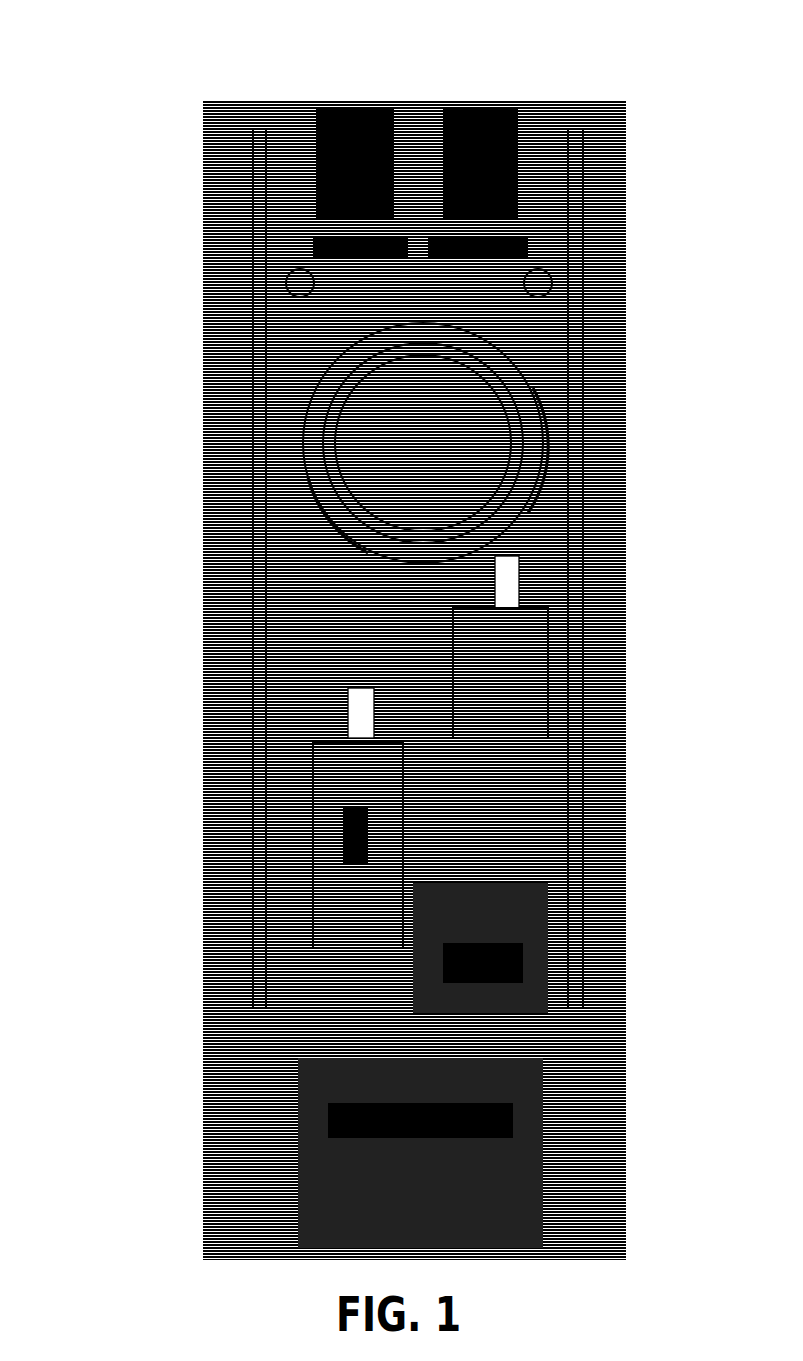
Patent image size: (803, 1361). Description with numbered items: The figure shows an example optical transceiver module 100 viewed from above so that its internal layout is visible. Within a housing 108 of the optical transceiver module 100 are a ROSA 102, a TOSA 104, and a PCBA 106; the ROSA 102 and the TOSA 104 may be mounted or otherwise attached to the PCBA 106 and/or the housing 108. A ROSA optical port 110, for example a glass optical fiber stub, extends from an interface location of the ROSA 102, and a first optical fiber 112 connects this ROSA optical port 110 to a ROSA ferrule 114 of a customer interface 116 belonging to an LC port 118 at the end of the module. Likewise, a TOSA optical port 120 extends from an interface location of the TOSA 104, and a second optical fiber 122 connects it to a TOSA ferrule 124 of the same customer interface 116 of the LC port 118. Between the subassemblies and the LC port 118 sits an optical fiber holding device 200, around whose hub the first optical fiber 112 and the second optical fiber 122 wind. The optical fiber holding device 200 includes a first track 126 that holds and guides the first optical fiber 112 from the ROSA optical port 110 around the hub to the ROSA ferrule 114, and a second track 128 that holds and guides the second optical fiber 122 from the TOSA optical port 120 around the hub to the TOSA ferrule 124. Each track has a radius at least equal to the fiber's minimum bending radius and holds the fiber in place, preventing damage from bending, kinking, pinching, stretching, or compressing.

The optical transceiver module 100 is at (612, 47).
The ROSA 102 is at (320, 830).
The TOSA 104 is at (490, 675).
The PCBA 106 is at (485, 860).
The housing 108 is at (240, 452).
The ROSA optical port 110 is at (330, 690).
The first optical fiber 112 is at (330, 440).
The ROSA ferrule 114 is at (310, 292).
The customer interface 116 is at (390, 170).
The LC port 118 is at (520, 240).
The TOSA optical port 120 is at (500, 575).
The second optical fiber 122 is at (530, 480).
The TOSA ferrule 124 is at (560, 300).
The first track 126 is at (525, 410).
The second track 128 is at (305, 490).
The optical fiber holding device 200 is at (415, 440).